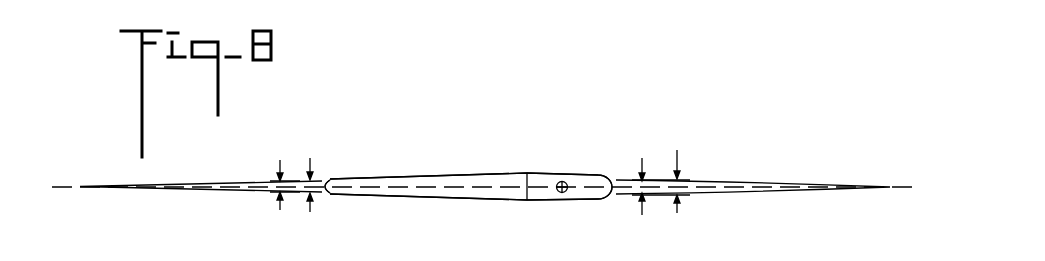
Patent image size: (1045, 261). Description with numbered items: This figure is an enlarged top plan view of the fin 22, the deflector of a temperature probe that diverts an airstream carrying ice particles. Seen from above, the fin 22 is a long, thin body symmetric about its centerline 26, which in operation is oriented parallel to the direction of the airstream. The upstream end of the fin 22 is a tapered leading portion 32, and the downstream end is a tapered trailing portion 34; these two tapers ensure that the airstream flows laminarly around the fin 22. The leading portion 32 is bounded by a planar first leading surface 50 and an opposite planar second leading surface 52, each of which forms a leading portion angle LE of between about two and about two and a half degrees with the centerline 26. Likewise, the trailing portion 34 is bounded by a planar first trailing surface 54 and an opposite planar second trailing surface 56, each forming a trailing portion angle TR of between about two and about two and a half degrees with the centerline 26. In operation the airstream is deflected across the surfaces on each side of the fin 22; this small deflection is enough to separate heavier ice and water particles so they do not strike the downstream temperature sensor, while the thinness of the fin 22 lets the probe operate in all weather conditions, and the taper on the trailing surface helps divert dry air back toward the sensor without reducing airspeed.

The fin 22 is at (574, 149).
The centerline 26 is at (62, 187).
The tapered leading portion 32 is at (382, 183).
The tapered trailing portion 34 is at (600, 186).
The first leading surface 50 is at (412, 175).
The second leading surface 52 is at (405, 201).
The first trailing surface 54 is at (546, 175).
The second trailing surface 56 is at (545, 201).
The leading portion angle LE is at (323, 178).
The trailing portion angle TR is at (672, 188).